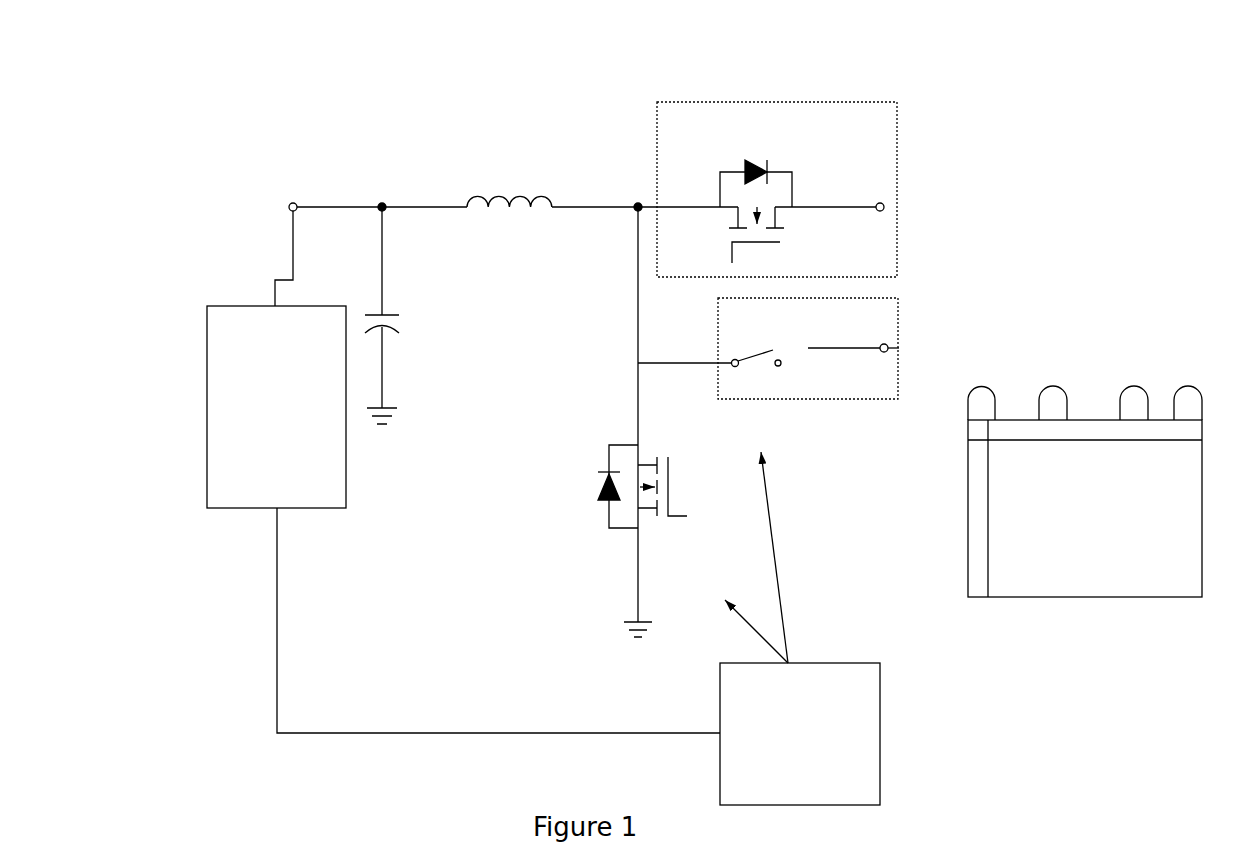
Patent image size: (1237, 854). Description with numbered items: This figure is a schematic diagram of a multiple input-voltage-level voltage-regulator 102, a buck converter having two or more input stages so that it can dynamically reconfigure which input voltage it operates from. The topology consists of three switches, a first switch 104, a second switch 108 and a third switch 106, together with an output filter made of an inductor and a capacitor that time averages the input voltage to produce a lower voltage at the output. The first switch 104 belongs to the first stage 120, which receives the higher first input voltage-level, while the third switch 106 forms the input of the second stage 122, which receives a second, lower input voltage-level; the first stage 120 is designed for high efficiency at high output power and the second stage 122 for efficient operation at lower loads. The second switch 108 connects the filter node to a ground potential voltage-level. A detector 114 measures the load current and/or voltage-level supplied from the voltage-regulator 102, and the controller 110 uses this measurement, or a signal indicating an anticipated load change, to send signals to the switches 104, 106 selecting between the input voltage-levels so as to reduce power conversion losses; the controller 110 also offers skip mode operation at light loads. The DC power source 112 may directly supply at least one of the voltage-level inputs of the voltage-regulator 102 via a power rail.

The multiple input-voltage-level voltage-regulator 102 is at (118, 287).
The first switch 104 is at (722, 135).
The third switch 106 is at (836, 380).
The second switch 108 is at (520, 477).
The controller 110 is at (810, 628).
The DC power source 112 is at (1085, 491).
The detector 114 is at (276, 407).
The first stage 120 is at (922, 158).
The second stage 122 is at (920, 320).